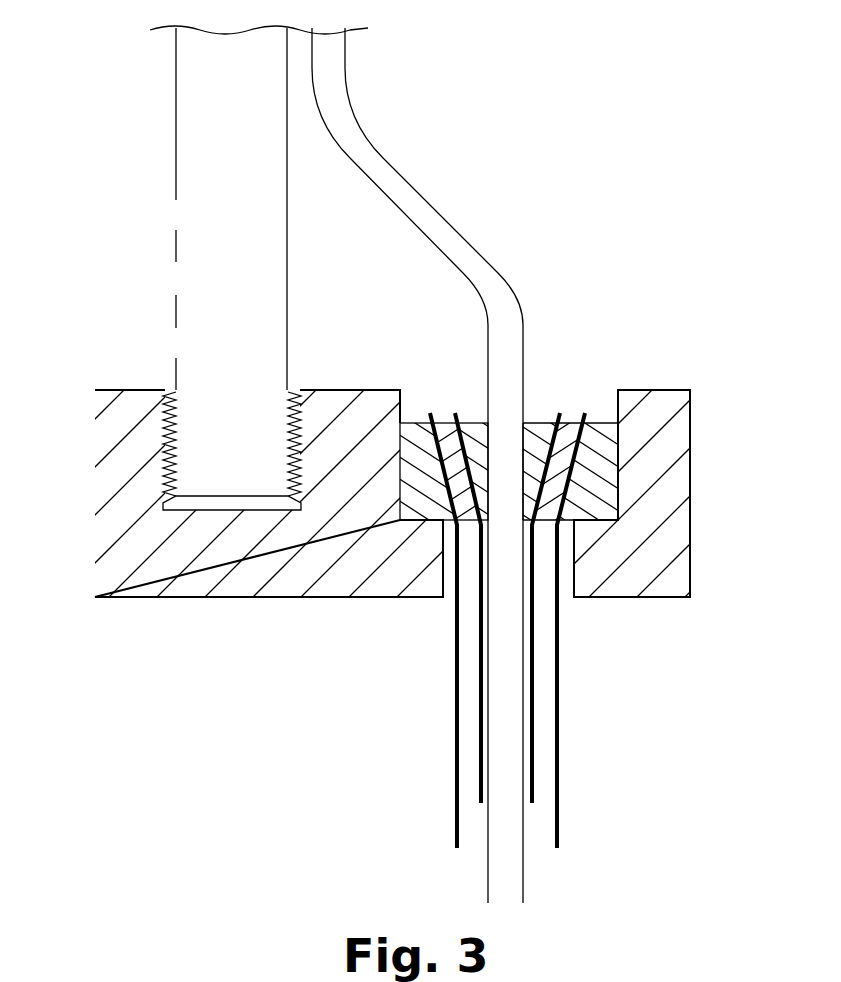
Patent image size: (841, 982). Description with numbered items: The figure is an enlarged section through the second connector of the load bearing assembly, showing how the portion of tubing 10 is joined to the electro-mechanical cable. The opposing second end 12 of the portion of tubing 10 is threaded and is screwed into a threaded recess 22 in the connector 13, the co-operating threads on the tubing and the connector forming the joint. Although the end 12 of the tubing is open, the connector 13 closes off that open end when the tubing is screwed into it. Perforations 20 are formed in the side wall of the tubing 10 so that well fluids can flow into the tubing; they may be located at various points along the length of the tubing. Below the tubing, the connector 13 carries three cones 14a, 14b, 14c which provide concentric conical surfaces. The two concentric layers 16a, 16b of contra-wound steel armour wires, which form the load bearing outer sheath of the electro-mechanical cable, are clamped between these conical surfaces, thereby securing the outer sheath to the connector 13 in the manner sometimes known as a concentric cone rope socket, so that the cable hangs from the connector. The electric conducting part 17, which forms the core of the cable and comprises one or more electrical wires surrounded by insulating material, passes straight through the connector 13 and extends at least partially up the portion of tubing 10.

The portion of tubing 10 is at (225, 97).
The perforations 20 is at (176, 280).
The opposing second end 12 is at (218, 405).
The threaded recess 22 is at (170, 462).
The connector 13 is at (133, 550).
The cone 14a is at (597, 473).
The cone 14b is at (573, 420).
The cone 14c is at (537, 420).
The electric conducting part 17 is at (423, 207).
The layer of contra-wound steel armour wires 16a is at (455, 706).
The layer of contra-wound steel armour wires 16b is at (480, 753).